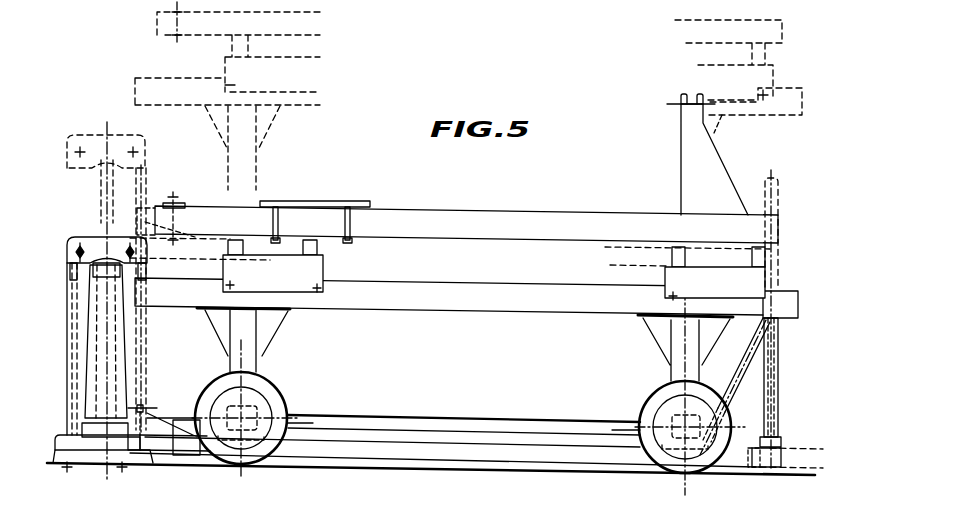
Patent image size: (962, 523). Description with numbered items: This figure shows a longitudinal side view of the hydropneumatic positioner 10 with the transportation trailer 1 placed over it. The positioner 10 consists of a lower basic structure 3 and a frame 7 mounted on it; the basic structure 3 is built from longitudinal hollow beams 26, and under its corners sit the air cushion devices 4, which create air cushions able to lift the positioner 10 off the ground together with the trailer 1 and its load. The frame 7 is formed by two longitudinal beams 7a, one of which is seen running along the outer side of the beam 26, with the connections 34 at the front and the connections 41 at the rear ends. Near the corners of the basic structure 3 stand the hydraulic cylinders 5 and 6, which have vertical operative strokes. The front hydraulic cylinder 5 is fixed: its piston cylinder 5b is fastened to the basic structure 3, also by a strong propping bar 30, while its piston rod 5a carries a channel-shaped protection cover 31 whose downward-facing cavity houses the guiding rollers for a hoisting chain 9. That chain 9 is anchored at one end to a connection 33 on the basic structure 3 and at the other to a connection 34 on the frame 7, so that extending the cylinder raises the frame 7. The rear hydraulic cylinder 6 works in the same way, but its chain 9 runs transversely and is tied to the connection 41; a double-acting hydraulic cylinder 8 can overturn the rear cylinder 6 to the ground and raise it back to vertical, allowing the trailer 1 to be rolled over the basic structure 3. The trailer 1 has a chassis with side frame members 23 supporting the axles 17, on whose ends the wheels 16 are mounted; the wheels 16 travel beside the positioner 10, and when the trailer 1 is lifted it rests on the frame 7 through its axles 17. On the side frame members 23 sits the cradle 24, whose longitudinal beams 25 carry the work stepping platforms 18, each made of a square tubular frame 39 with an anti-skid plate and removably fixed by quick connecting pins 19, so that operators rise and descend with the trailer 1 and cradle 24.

The transportation trailer 1 is at (176, 110).
The basic structure 3 is at (405, 460).
The air cushion devices 4 is at (118, 462).
The hydraulic cylinders 5 is at (85, 345).
The piston rods 5a is at (110, 192).
The piston cylinders 5b is at (100, 376).
The rear hydraulic cylinders 6 is at (781, 379).
The frame 7 is at (163, 406).
The longitudinal beams 7a is at (340, 450).
The hydraulic cylinders 8 is at (730, 385).
The hoisting chains 9 is at (142, 387).
The hydropneumatic positioner 10 is at (477, 472).
The wheels 16 is at (278, 406).
The axles 17 is at (253, 407).
The work stepping platforms 18 is at (323, 204).
The quick connecting pins 19 is at (350, 244).
The side frame members 23 is at (430, 303).
The cradle 24 is at (214, 37).
The longitudinal beams 25 is at (515, 226).
The longitudinal hollow beams 26 is at (518, 452).
The propping bars 30 is at (122, 323).
The protection cover 31 is at (97, 238).
The connection 33 is at (70, 440).
The connection 34 is at (140, 438).
The square tubular frame 39 is at (350, 228).
The connections 41 is at (763, 468).